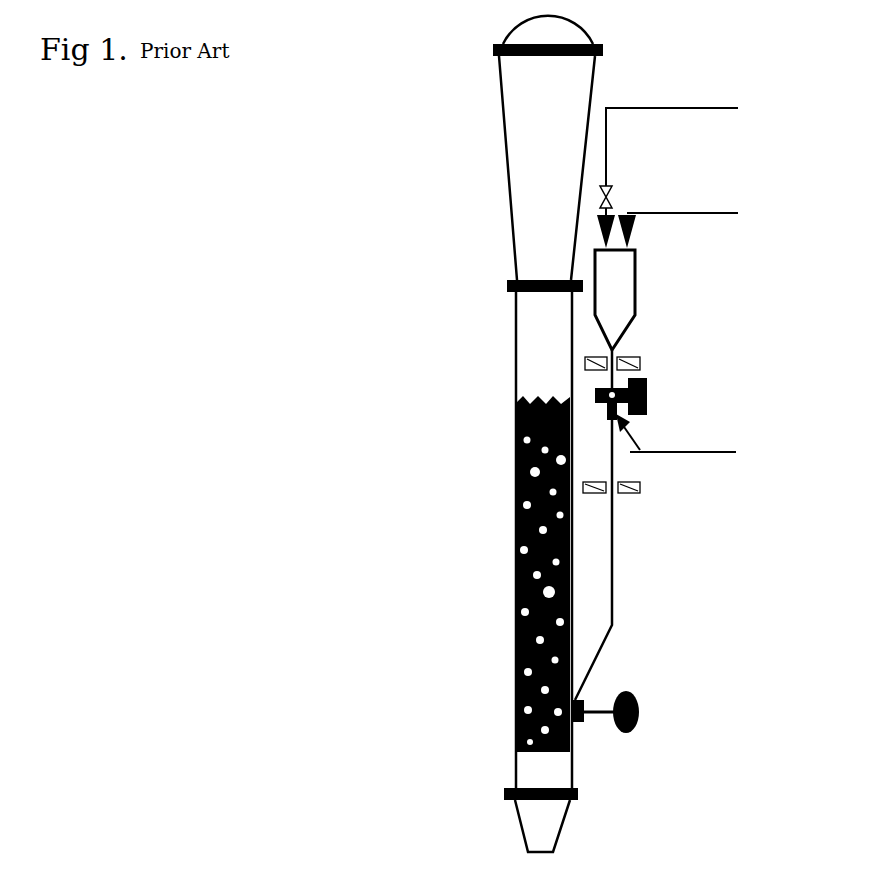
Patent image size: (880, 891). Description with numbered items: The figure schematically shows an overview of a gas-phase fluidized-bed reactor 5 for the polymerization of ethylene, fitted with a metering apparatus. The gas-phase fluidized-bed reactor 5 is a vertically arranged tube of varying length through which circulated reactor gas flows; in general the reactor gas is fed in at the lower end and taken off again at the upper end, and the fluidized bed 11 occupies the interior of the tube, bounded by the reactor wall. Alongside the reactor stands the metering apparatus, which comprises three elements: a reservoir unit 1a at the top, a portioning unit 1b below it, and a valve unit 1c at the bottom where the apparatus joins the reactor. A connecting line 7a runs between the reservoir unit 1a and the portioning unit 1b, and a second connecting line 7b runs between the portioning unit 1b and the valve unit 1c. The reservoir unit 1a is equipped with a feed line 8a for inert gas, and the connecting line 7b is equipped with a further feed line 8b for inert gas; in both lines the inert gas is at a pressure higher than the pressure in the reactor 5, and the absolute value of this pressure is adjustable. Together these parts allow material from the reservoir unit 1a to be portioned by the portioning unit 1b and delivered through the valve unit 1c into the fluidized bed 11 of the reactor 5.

The gas-phase fluidized-bed reactor 5 is at (535, 362).
The fluidized bed 11 is at (516, 576).
The feed line 8a is at (683, 213).
The reservoir unit 1a is at (636, 290).
The connecting line 7a is at (640, 376).
The portioning unit 1b is at (647, 400).
The feed line 8b is at (676, 452).
The connecting line 7b is at (615, 568).
The valve unit 1c is at (630, 730).